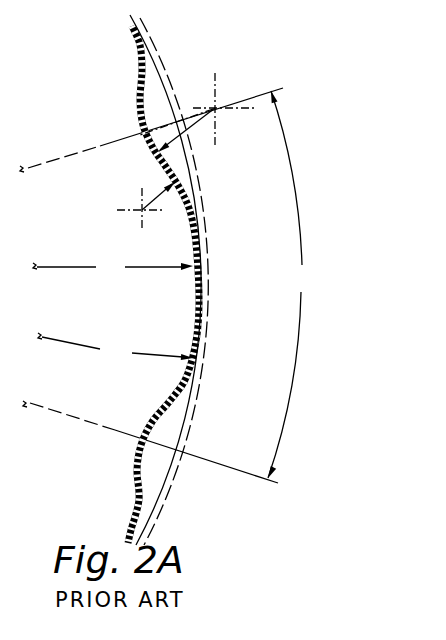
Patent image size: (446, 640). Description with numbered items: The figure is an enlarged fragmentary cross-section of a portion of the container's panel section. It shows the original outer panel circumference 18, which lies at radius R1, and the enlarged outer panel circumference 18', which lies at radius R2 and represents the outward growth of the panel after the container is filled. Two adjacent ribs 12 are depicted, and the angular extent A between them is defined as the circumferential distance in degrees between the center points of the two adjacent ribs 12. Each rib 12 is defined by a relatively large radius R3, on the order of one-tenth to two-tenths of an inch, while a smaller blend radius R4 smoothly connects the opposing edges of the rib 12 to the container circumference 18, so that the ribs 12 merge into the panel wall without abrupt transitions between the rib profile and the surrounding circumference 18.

The ribs 12 is at (140, 280).
The original outer panel circumference 18 is at (164, 280).
The enlarged outer panel circumference 18' is at (213, 281).
The radius of original outer panel circumference R1 is at (113, 269).
The radius of enlarged outer panel circumference R2 is at (115, 349).
The rib radius R3 is at (199, 130).
The blend radius R4 is at (143, 196).
The angular extent A is at (287, 284).